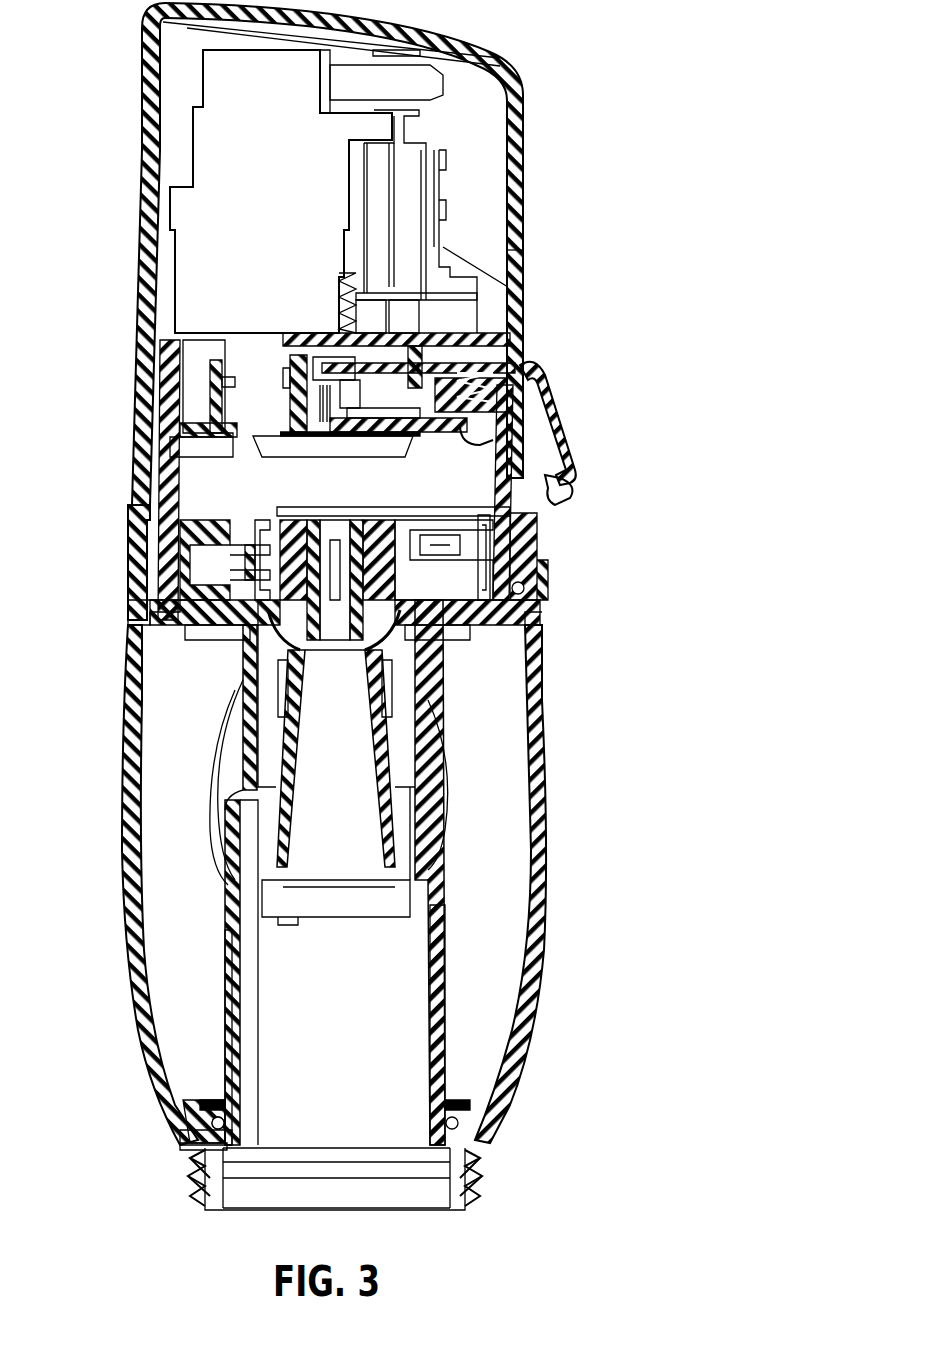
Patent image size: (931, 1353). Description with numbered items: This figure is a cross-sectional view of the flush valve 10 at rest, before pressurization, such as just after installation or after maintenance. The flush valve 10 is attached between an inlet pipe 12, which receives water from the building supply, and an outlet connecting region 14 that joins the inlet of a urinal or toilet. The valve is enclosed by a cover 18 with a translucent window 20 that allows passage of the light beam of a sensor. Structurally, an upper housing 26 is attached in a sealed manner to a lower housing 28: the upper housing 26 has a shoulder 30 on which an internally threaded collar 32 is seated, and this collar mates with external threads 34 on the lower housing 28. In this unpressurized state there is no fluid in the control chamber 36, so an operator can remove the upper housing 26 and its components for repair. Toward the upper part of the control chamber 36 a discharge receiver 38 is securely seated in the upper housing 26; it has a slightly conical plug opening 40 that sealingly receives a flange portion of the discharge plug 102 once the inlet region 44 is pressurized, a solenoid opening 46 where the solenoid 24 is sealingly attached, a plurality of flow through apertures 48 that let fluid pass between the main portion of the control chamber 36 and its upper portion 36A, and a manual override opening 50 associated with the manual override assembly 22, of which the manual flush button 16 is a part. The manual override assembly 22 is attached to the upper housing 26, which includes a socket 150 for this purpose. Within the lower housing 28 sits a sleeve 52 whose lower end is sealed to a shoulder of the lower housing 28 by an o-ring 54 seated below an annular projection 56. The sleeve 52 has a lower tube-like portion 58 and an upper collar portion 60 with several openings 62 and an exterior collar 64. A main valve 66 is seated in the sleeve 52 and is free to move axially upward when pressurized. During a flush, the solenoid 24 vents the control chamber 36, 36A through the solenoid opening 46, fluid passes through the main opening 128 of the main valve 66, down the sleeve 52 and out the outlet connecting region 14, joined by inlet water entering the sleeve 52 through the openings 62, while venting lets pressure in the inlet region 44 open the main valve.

The flush valve 10 is at (108, 1086).
The inlet pipe 12 is at (230, 768).
The outlet connecting region 14 is at (483, 1196).
The manual flush button 16 is at (575, 478).
The cover 18 is at (148, 214).
The translucent window 20 is at (522, 250).
The manual override assembly 22 is at (575, 393).
The solenoid 24 is at (268, 264).
The upper housing 26 is at (145, 493).
The lower housing 28 is at (130, 776).
The shoulder 30 is at (540, 540).
The internally threaded collar 32 is at (540, 565).
The external threads 34 is at (530, 598).
The control chamber 36 is at (378, 496).
The upper portion of the control chamber 36A is at (290, 400).
The discharge receiver 38 is at (158, 468).
The plug opening 40 is at (372, 458).
The inlet region 44 is at (160, 1058).
The solenoid opening 46 is at (228, 434).
The flow through apertures 48 is at (510, 440).
The manual override opening 50 is at (380, 431).
The sleeve 52 is at (448, 1040).
The o-ring 54 is at (460, 1124).
The annular projection 56 is at (460, 1100).
The lower tube-like portion 58 is at (445, 990).
The upper collar portion 60 is at (440, 625).
The openings 62 is at (190, 632).
The exterior collar 64 is at (130, 612).
The main valve 66 is at (440, 807).
The discharge plug 102 is at (275, 515).
The main opening 128 is at (303, 832).
The socket 150 is at (330, 336).